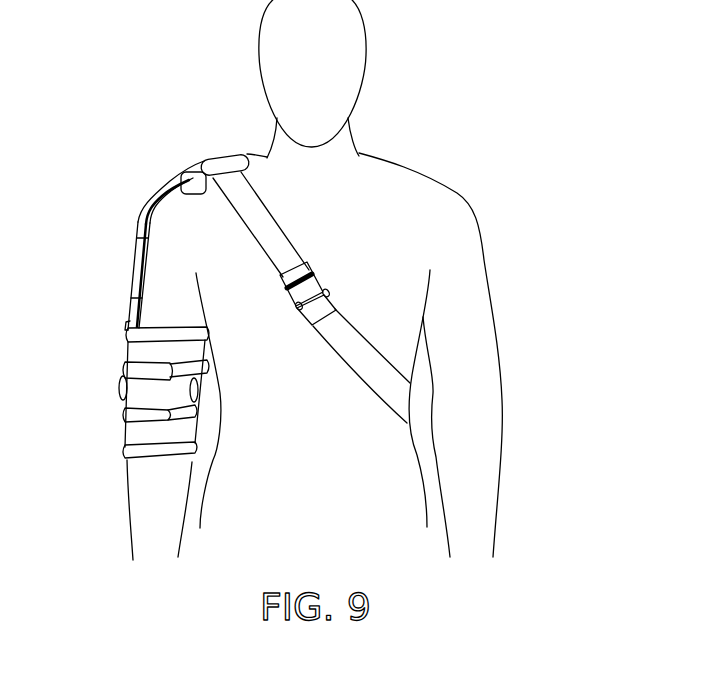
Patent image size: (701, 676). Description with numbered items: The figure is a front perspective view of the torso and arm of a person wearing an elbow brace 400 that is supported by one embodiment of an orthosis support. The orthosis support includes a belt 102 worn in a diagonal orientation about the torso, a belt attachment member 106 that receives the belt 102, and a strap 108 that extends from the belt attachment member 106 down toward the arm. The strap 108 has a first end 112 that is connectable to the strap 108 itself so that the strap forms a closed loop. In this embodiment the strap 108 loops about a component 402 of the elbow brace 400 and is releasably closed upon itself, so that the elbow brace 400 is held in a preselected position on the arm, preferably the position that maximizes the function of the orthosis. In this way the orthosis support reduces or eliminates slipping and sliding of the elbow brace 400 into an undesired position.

The belt 102 is at (273, 228).
The belt attachment member 106 is at (223, 158).
The strap 108 is at (152, 196).
The first end 112 is at (133, 263).
The elbow brace 400 is at (122, 428).
The component 402 is at (152, 345).